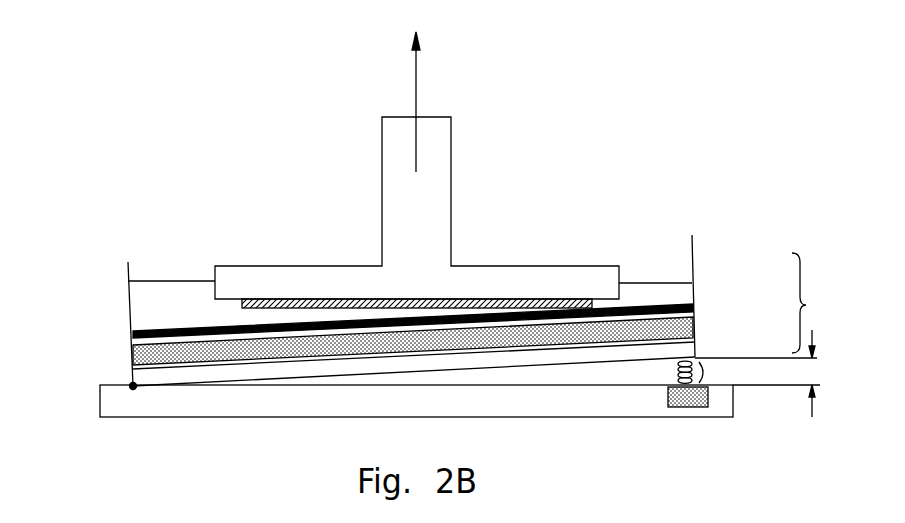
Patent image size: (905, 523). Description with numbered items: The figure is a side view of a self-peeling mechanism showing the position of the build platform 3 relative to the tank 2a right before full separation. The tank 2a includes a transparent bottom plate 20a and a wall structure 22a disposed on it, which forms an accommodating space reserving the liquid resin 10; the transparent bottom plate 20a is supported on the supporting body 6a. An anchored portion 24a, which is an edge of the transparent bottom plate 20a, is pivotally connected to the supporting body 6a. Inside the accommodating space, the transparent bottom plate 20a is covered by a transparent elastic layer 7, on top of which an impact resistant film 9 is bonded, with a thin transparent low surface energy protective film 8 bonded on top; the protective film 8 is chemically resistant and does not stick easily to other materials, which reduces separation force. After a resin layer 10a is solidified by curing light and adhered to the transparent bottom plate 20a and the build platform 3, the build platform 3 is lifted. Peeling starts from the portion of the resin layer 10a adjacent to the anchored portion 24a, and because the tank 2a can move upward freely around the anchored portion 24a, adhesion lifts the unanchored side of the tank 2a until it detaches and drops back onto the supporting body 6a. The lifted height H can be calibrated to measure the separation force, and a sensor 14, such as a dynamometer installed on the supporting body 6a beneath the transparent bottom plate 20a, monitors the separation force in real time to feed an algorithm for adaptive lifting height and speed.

The build platform 3 is at (305, 266).
The liquid resin 10 is at (172, 281).
The wall structure 22a is at (692, 260).
The resin layer 10a is at (242, 306).
The transparent low surface energy protective film 8 is at (630, 305).
The impact resistant film 9 is at (133, 343).
The transparent elastic layer 7 is at (695, 330).
The transparent bottom plate 20a is at (693, 349).
The anchored portion 24a is at (133, 386).
The supporting body 6a is at (110, 402).
The sensor 14 is at (685, 407).
The tank 2a is at (817, 303).
The lifted height H is at (767, 373).